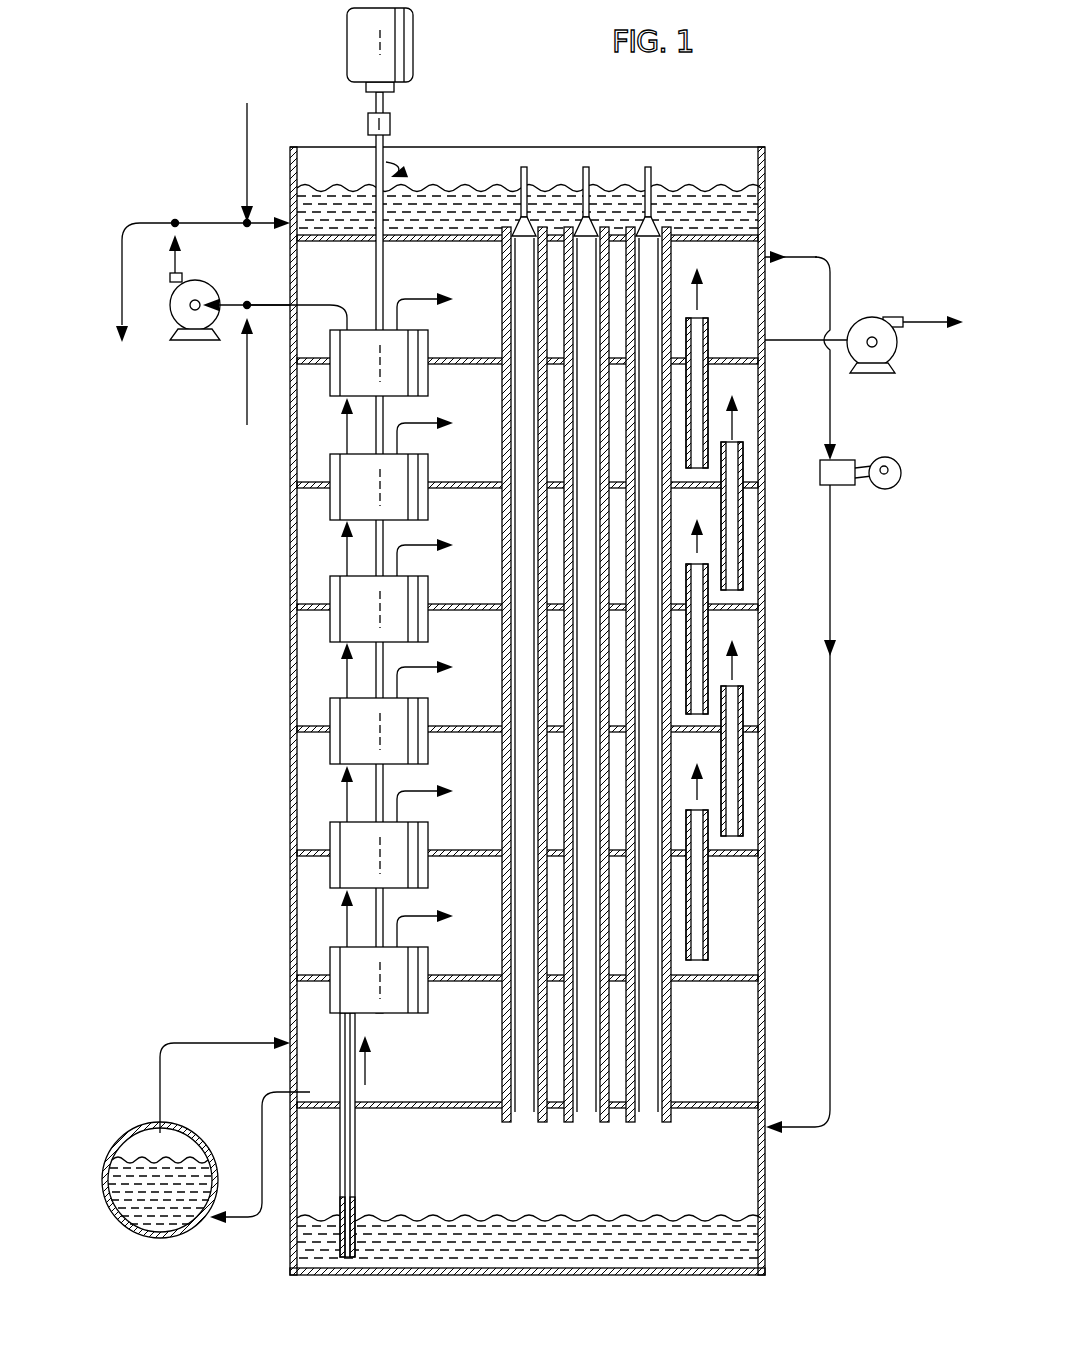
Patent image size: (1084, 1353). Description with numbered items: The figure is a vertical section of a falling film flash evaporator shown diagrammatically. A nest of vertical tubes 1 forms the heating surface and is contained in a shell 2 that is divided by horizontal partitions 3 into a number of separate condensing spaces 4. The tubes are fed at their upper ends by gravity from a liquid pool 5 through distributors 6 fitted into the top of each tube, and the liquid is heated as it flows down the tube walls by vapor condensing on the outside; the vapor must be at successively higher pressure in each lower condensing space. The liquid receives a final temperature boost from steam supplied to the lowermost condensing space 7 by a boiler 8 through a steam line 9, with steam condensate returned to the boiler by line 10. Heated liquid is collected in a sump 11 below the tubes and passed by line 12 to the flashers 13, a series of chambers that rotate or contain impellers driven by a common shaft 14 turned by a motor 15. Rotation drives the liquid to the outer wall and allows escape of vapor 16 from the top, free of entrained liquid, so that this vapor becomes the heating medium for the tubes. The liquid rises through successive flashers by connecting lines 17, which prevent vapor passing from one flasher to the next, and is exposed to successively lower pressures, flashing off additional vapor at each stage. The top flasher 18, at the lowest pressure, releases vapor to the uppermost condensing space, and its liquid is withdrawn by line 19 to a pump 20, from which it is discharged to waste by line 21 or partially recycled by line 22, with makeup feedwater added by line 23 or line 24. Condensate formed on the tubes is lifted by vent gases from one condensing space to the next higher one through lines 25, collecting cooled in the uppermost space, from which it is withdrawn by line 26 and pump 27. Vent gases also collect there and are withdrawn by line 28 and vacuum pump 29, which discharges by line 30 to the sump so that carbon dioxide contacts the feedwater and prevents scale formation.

The vertical tubes 1 is at (500, 390).
The shell 2 is at (290, 569).
The horizontal partitions 3 is at (465, 243).
The condensing spaces 4 is at (312, 456).
The liquid pool 5 is at (452, 185).
The distributors 6 is at (528, 232).
The lowermost condensing space 7 is at (462, 1087).
The boiler 8 is at (152, 1240).
The steam line 9 is at (186, 1043).
The condensate return line 10 is at (240, 1224).
The sump 11 is at (585, 1225).
The line 12 is at (357, 1158).
The flashers 13 is at (345, 499).
The common shaft 14 is at (382, 182).
The motor 15 is at (395, 43).
The vapor 16 is at (412, 296).
The connecting lines 17 is at (345, 427).
The top flasher 18 is at (400, 351).
The line 19 is at (335, 302).
The pump 20 is at (190, 292).
The line 21 is at (121, 251).
The line 22 is at (266, 233).
The line 23 is at (247, 388).
The line 24 is at (247, 160).
The lines 25 is at (706, 322).
The line 26 is at (836, 338).
The pump 27 is at (862, 327).
The line 28 is at (834, 404).
The vacuum pump 29 is at (845, 469).
The line 30 is at (832, 728).